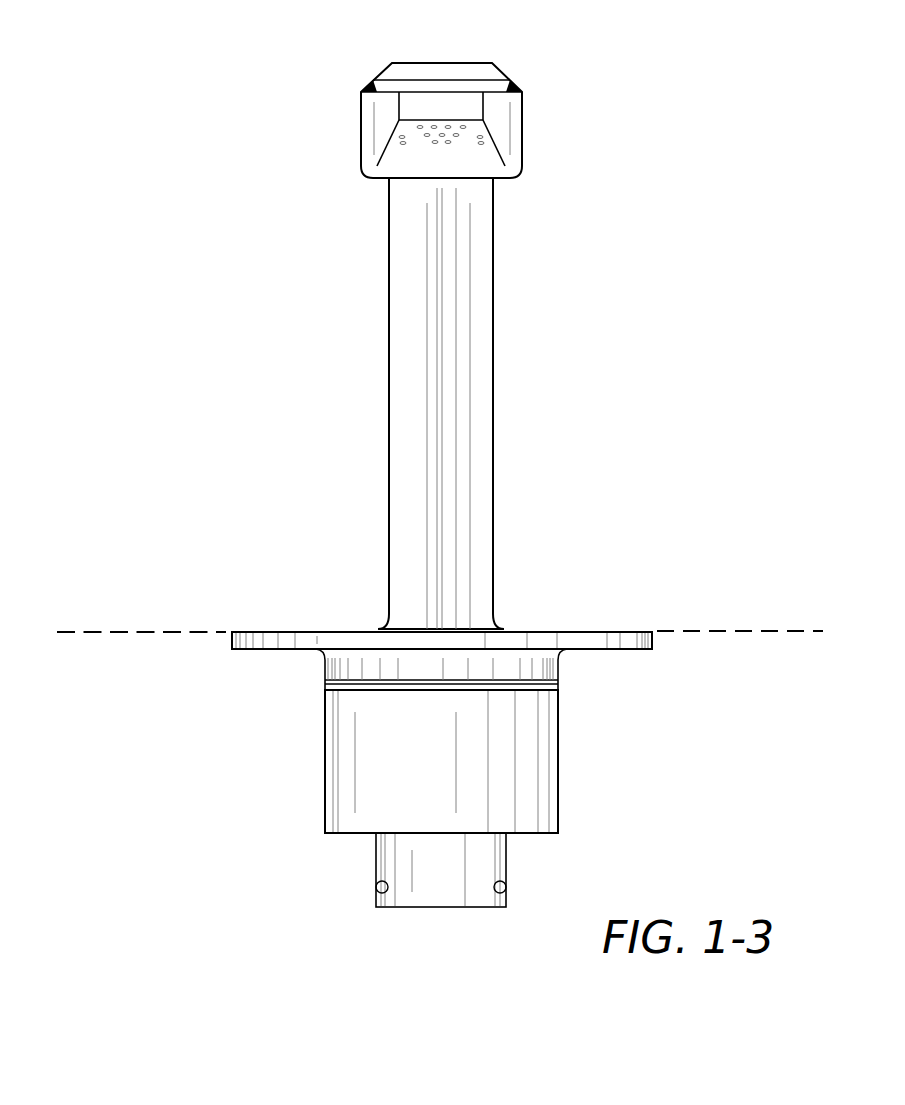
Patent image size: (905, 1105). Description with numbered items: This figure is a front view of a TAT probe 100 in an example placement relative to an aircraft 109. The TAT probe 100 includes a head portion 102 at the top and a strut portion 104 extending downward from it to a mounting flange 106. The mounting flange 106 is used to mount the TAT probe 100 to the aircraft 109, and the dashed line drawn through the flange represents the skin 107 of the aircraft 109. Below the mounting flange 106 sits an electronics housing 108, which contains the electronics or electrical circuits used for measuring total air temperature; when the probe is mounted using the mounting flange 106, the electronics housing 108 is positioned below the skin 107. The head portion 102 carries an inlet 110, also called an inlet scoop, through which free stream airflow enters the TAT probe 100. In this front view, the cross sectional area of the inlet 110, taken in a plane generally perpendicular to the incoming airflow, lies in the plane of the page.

The TAT probe 100 is at (596, 81).
The head portion 102 is at (435, 68).
The strut portion 104 is at (462, 283).
The mounting flange 106 is at (592, 640).
The skin 107 is at (750, 631).
The electronics housing 108 is at (545, 746).
The aircraft 109 is at (716, 592).
The inlet 110 is at (504, 131).